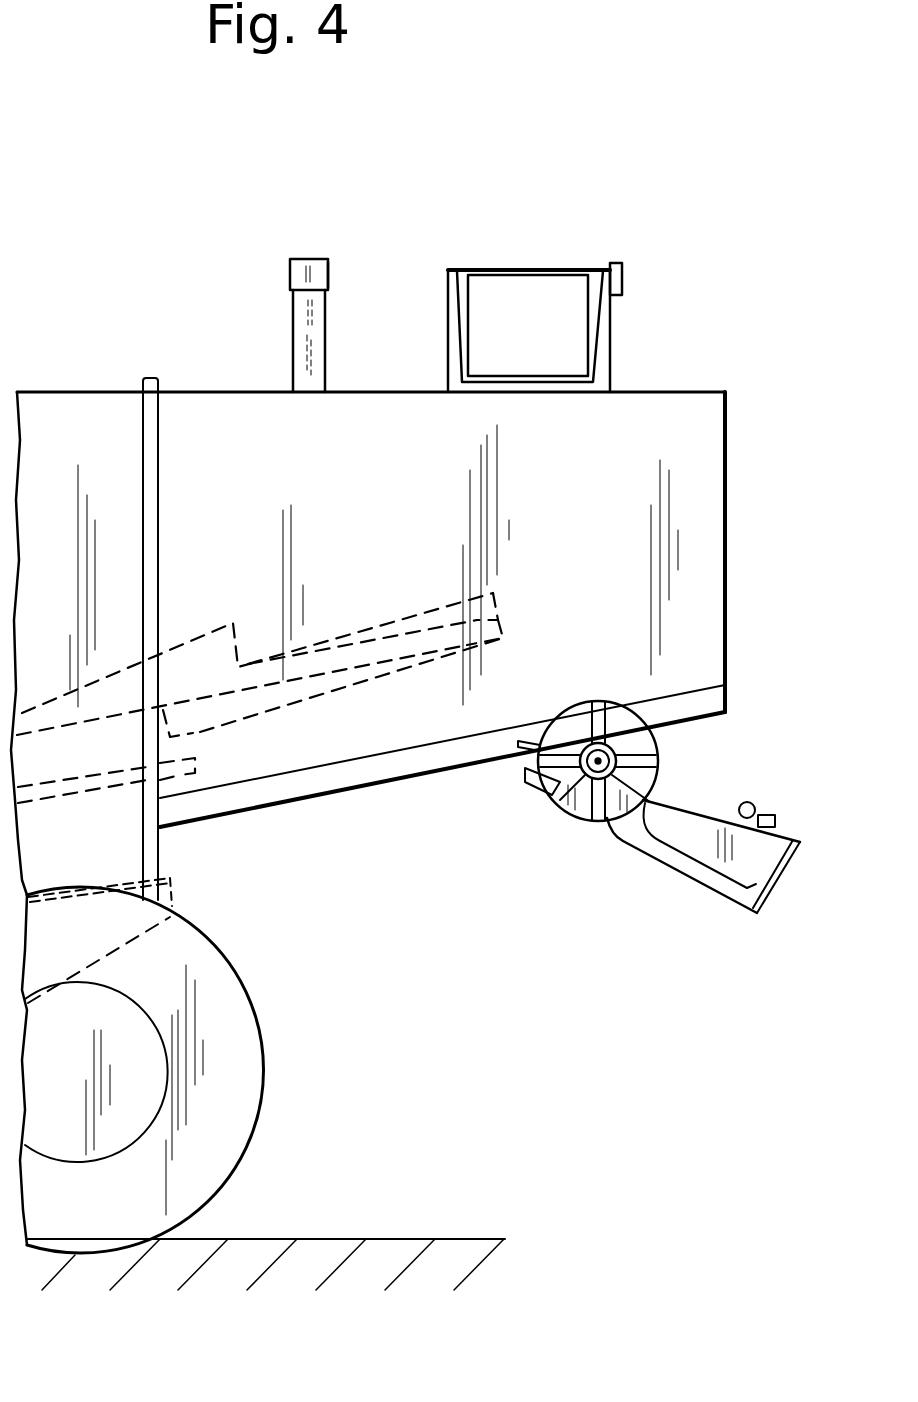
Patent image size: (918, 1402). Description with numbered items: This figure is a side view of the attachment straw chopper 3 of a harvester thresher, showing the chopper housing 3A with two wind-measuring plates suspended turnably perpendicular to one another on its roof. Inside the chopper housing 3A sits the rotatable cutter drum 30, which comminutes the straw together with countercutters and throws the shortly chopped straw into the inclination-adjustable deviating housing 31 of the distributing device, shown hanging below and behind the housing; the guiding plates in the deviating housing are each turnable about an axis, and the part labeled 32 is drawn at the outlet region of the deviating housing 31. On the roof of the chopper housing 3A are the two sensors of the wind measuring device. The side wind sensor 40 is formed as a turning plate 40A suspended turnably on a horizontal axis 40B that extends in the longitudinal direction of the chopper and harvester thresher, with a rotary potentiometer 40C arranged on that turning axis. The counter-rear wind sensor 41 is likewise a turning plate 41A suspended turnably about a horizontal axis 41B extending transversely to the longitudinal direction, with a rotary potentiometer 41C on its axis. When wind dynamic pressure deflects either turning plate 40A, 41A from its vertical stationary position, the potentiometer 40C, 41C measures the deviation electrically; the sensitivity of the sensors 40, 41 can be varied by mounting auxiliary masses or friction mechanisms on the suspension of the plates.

The attachment straw chopper 3 is at (352, 508).
The chopper housing 3A is at (703, 443).
The cutter drum 30 is at (583, 807).
The deviating housing 31 is at (682, 891).
The bucket 32 is at (695, 842).
The side wind sensor 40 is at (594, 282).
The turning plate 40A is at (565, 356).
The horizontal axis 40B is at (520, 268).
The rotary potentiometer 40C is at (618, 280).
The counter-rear wind sensor 41 is at (301, 291).
The turning plate 41A is at (308, 343).
The horizontal axis 41B is at (303, 265).
The rotary potentiometer 41C is at (330, 270).